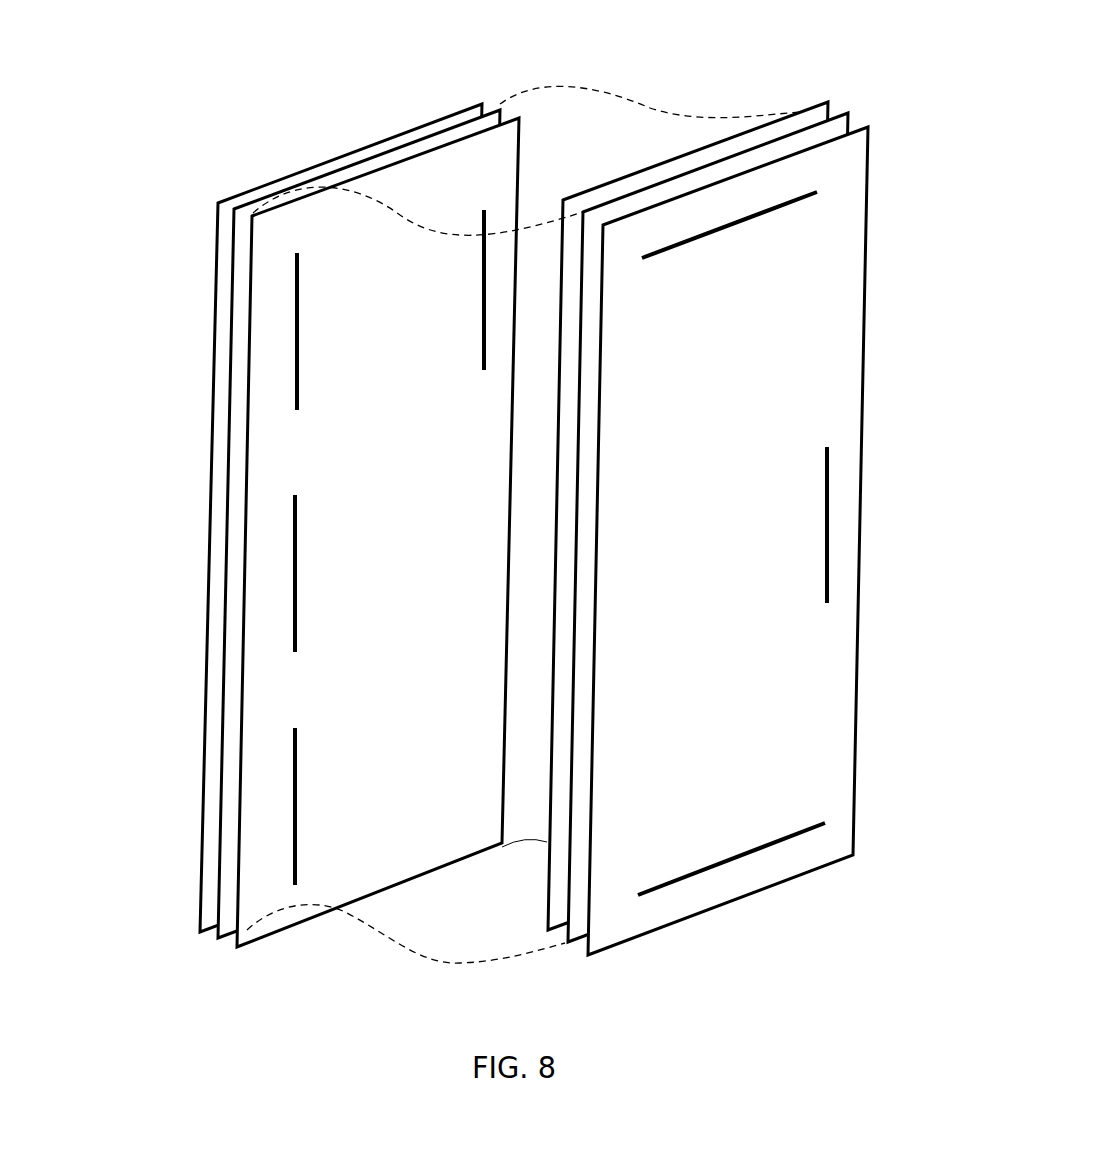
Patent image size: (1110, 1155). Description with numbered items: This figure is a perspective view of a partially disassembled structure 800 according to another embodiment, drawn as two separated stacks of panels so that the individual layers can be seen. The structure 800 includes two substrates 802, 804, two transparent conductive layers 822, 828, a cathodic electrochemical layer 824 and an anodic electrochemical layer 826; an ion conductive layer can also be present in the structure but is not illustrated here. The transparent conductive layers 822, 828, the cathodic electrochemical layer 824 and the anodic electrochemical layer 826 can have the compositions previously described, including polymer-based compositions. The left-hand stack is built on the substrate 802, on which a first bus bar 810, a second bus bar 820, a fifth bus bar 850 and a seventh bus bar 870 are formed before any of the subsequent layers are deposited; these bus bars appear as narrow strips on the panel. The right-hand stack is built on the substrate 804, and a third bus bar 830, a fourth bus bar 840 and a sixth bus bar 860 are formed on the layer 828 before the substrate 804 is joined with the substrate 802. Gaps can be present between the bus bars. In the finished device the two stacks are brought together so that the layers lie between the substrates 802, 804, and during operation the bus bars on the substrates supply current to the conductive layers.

The structure 800 is at (515, 493).
The substrate 802 is at (303, 506).
The substrate 804 is at (761, 489).
The first bus bar 810 is at (303, 343).
The second bus bar 820 is at (477, 230).
The transparent conductive layer 822 is at (232, 310).
The cathodic electrochemical layer 824 is at (260, 800).
The anodic electrochemical layer 826 is at (745, 127).
The transparent conductive layer 828 is at (850, 115).
The third bus bar 830 is at (723, 232).
The fourth bus bar 840 is at (757, 843).
The fifth bus bar 850 is at (305, 585).
The sixth bus bar 860 is at (817, 540).
The seventh bus bar 870 is at (305, 807).